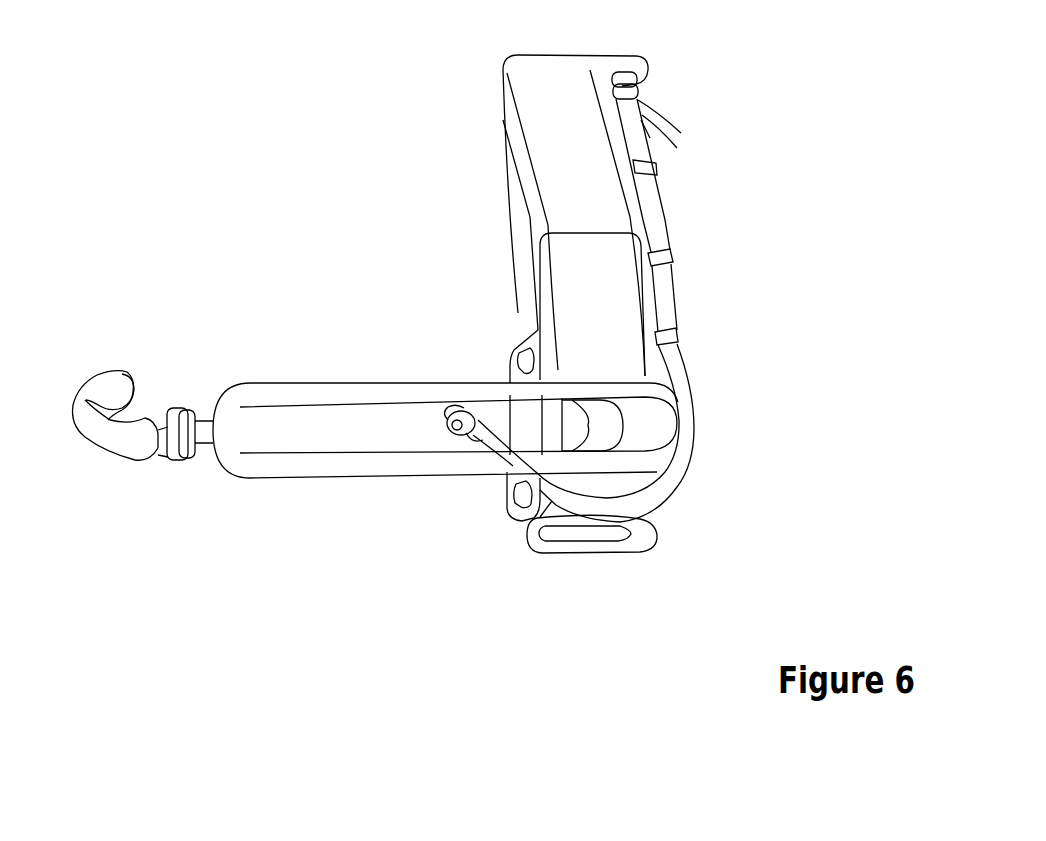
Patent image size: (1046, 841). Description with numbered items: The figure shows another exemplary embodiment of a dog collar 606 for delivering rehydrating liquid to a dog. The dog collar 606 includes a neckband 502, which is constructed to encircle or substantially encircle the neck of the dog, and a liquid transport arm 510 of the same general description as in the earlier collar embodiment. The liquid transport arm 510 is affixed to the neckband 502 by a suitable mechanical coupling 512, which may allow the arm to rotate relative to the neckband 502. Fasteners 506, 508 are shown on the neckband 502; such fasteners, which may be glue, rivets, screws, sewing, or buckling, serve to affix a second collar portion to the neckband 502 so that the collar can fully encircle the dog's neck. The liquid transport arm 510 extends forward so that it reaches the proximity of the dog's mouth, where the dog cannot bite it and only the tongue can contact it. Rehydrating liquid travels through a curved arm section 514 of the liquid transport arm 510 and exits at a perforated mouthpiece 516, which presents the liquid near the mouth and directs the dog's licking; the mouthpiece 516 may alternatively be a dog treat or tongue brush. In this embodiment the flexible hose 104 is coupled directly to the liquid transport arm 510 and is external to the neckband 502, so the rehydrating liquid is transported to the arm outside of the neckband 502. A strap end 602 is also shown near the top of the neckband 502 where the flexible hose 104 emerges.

The flexible hose 104 is at (680, 203).
The neckband 502 is at (532, 187).
The fastener 506 is at (497, 505).
The fastener 508 is at (648, 541).
The liquid transport arm 510 is at (662, 568).
The mechanical coupling 512 is at (450, 402).
The curved arm section 514 is at (66, 442).
The perforated mouthpiece 516 is at (132, 363).
The strap end 602 is at (670, 106).
The dog collar 606 is at (312, 149).